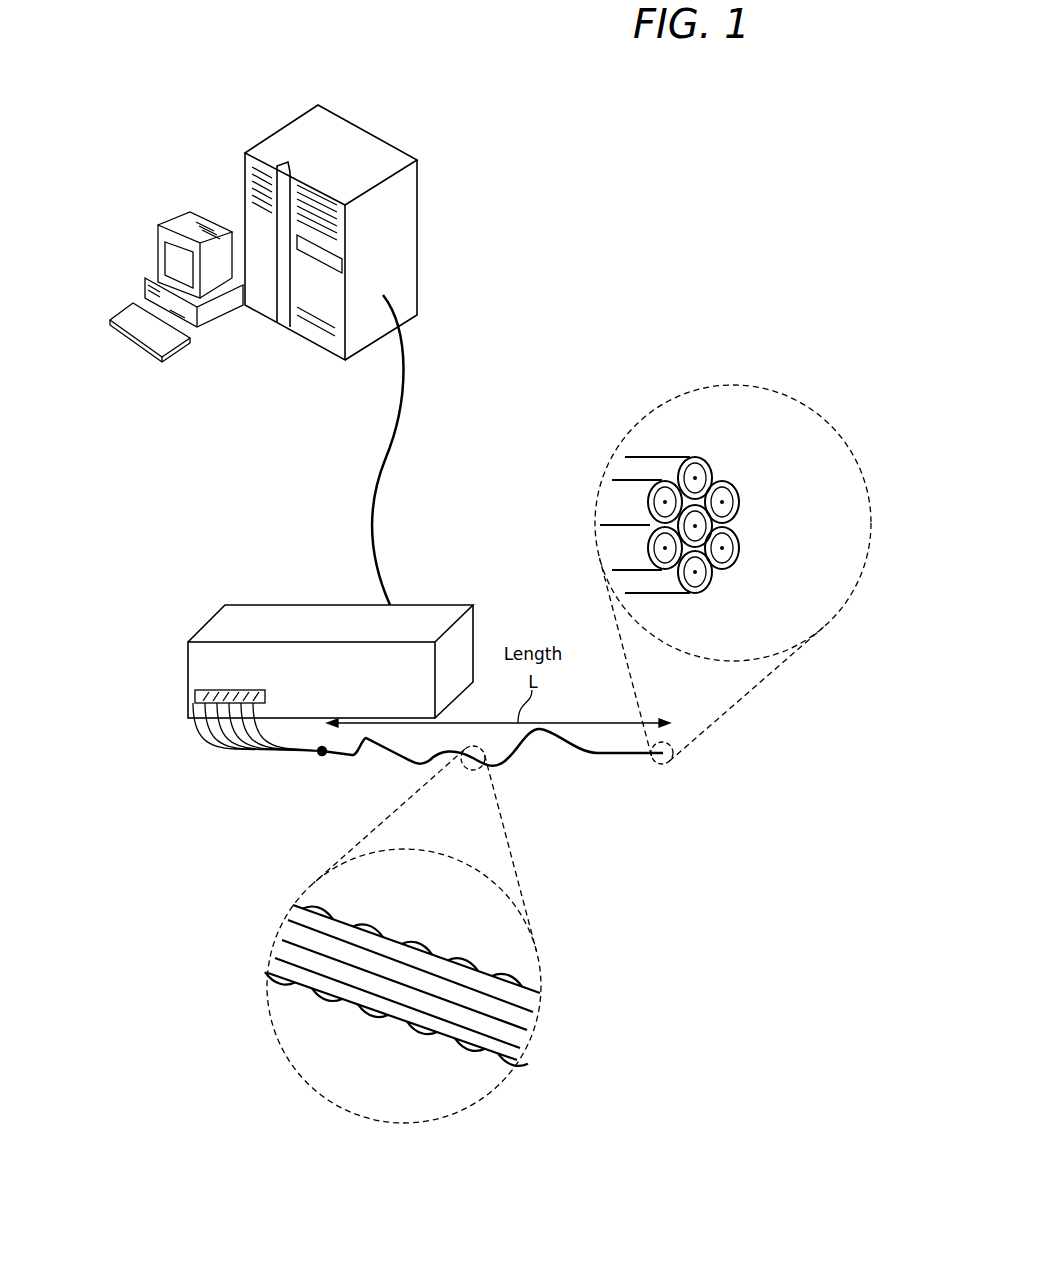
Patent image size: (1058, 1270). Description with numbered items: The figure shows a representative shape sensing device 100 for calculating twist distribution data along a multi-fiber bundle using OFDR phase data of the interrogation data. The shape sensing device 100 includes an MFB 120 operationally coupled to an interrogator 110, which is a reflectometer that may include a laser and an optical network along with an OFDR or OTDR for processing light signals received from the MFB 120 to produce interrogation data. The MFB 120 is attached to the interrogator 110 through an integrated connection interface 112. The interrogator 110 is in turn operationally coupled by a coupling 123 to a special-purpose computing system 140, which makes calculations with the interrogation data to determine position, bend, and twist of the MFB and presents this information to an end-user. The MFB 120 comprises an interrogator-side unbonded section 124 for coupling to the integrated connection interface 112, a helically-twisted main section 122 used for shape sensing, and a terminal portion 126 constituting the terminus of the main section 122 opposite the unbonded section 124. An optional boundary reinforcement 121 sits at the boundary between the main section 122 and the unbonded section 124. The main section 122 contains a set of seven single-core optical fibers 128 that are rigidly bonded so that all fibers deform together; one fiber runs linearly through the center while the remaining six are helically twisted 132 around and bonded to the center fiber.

The shape sensing device 100 is at (666, 170).
The interrogator 110 is at (287, 615).
The integrated connection interface 112 is at (208, 680).
The MFB 120 is at (383, 768).
The boundary reinforcement 121 is at (316, 772).
The main section 122 is at (465, 937).
The coupling 123 is at (421, 391).
The unbonded section 124 is at (172, 750).
The terminal portion 126 is at (703, 617).
The single-core optical fibers 128 is at (760, 458).
The helical twist 132 is at (353, 1024).
The special-purpose computing system 140 is at (142, 148).